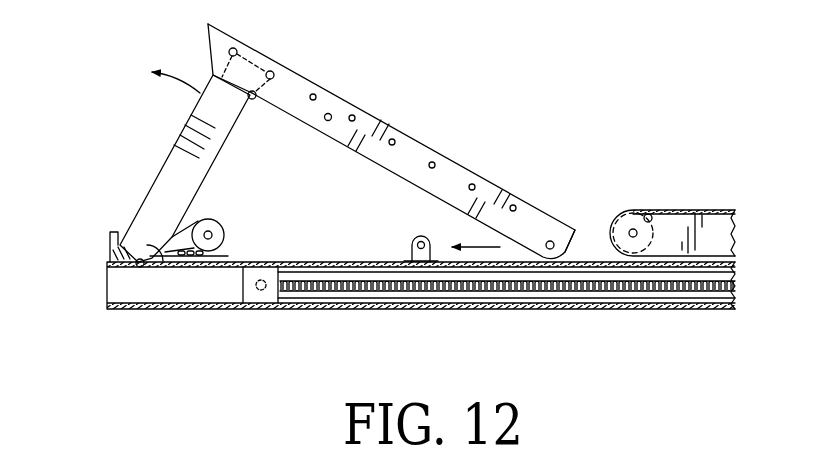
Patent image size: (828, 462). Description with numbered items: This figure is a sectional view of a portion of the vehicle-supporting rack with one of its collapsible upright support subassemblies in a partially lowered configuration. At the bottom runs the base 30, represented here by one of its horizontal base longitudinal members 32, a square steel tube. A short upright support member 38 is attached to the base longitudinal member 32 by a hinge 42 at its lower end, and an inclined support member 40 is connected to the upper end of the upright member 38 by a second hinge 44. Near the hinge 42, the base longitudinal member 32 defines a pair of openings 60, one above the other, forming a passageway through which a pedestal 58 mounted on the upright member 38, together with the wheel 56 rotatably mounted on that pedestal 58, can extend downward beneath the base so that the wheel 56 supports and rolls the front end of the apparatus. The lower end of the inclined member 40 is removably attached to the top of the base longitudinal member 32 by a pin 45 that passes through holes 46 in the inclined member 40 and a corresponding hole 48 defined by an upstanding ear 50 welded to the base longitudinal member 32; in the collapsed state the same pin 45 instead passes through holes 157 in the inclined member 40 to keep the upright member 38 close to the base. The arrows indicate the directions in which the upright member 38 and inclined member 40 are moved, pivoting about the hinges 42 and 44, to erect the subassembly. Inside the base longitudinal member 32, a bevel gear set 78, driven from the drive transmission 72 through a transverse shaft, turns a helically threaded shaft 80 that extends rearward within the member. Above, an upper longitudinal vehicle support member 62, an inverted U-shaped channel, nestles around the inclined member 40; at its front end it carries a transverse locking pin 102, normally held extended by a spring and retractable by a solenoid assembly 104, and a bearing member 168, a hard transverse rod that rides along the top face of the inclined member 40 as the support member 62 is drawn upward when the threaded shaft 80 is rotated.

The base 30 is at (284, 259).
The base longitudinal member 32 is at (430, 310).
The upright support member 38 is at (162, 182).
The inclined support member 40 is at (413, 152).
The hinge 42 is at (138, 267).
The hinge 44 is at (255, 100).
The pin 45 is at (548, 243).
The holes 46 is at (575, 243).
The hole 48 is at (413, 240).
The upstanding ear 50 is at (410, 250).
The wheel 56 is at (224, 248).
The pedestal 58 is at (200, 213).
The openings 60 is at (228, 308).
The upper longitudinal vehicle support member 62 is at (693, 210).
The drive transmission 72 is at (110, 232).
The bevel gear set 78 is at (259, 300).
The helically threaded shaft 80 is at (372, 293).
The locking pin 102 is at (637, 233).
The solenoid assembly 104 is at (623, 210).
The holes 157 is at (332, 115).
The bearing member 168 is at (640, 212).